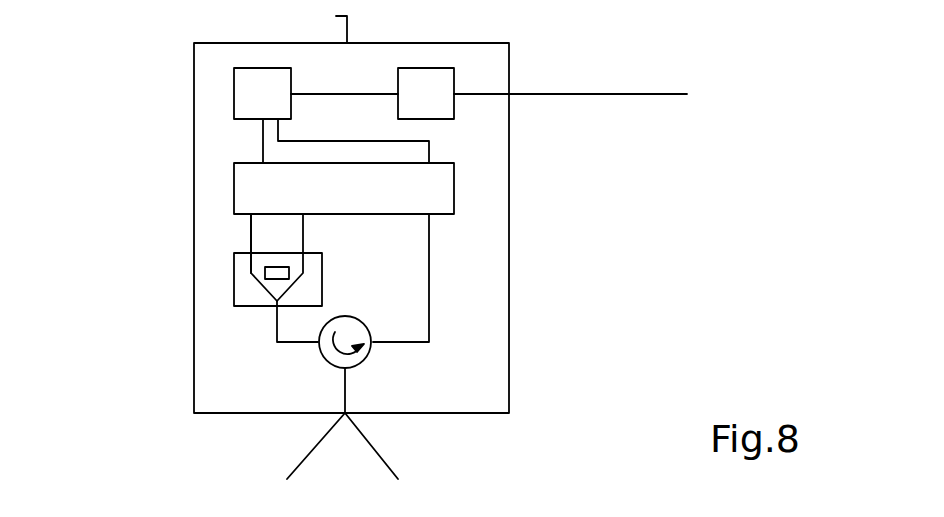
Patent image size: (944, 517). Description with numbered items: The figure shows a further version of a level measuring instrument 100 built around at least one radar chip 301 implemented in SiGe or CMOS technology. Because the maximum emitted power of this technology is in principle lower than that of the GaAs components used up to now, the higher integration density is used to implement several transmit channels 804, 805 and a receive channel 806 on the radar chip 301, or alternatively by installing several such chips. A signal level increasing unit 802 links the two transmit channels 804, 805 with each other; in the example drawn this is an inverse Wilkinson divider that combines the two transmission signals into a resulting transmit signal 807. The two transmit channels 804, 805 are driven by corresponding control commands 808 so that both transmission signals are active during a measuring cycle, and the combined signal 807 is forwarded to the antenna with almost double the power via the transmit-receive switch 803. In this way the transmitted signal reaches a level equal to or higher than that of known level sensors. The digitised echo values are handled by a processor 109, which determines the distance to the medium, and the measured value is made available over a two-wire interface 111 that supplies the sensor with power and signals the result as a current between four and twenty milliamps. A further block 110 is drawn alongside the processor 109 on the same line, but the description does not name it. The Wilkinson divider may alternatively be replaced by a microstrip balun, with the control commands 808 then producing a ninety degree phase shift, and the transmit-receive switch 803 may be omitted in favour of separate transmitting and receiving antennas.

The level measuring instrument 100 is at (641, 231).
The processor 109 is at (234, 94).
The module 110 is at (453, 112).
The two-wire interface 111 is at (687, 94).
The control commands 808 is at (357, 140).
The radar chip 301 is at (453, 188).
The transmit channel 804 is at (303, 232).
The transmit channel 805 is at (251, 232).
The signal level increasing unit 802 is at (234, 288).
The receive channel 806 is at (430, 287).
The resulting transmit signal 807 is at (284, 342).
The transmit-receive switch 803 is at (368, 355).